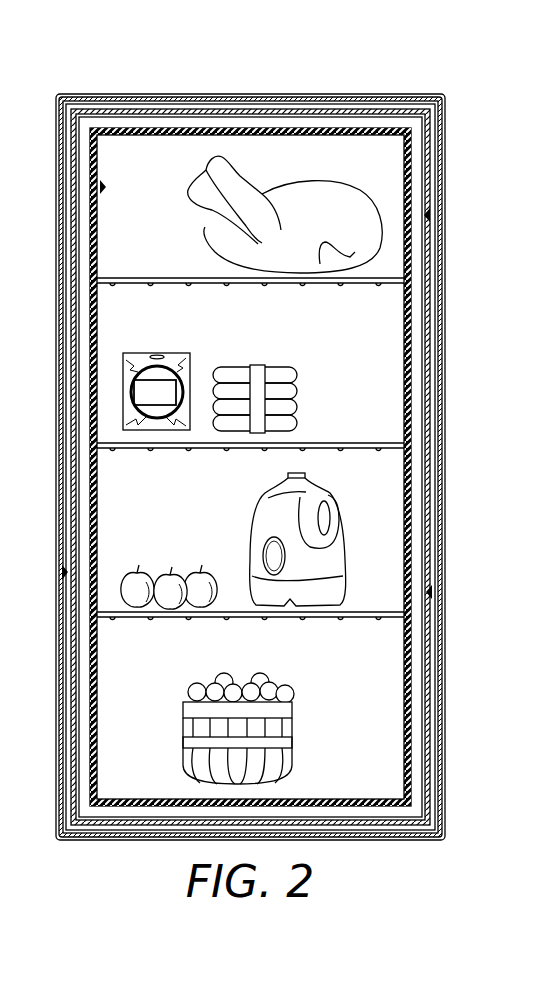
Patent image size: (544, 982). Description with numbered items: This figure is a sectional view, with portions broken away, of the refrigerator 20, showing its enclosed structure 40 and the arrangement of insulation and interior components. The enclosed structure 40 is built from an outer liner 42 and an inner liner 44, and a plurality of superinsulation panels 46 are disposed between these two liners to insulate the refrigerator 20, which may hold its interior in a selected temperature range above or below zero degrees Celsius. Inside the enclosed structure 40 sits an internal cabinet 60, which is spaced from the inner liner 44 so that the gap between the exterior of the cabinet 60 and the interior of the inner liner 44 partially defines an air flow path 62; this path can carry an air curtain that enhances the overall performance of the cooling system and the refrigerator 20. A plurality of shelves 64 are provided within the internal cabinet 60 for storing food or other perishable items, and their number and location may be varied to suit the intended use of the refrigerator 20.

The refrigerator 20 is at (466, 341).
The enclosed structure 40 is at (444, 442).
The outer liner 42 is at (350, 95).
The inner liner 44 is at (406, 161).
The superinsulation panels 46 is at (160, 106).
The internal cabinet 60 is at (104, 184).
The air flow path 62 is at (410, 605).
The shelves 64 is at (180, 285).